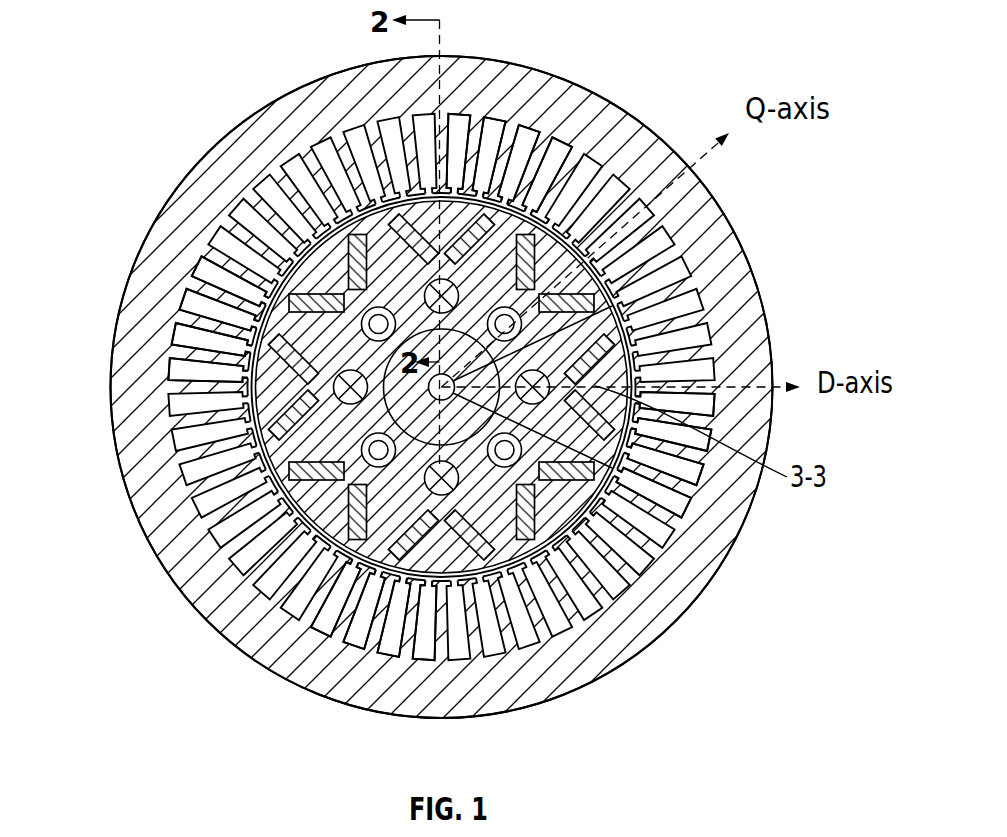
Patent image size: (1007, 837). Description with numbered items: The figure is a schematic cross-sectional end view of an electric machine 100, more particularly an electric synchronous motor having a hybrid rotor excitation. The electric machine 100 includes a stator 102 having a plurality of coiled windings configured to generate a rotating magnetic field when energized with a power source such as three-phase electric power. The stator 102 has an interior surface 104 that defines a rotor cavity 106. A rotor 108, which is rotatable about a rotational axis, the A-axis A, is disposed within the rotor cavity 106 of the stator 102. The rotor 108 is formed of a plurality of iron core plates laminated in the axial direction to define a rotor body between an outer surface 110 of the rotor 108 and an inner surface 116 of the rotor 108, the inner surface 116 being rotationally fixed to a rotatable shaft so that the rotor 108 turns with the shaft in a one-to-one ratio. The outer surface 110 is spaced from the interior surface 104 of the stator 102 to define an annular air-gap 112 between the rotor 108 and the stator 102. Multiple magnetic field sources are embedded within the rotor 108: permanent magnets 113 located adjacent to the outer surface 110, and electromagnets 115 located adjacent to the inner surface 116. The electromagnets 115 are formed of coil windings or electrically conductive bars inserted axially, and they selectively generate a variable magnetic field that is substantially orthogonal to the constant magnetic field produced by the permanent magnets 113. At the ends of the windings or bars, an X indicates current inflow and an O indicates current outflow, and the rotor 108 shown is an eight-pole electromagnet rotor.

The electric machine 100 is at (815, 170).
The stator 102 is at (334, 106).
The interior surface 104 is at (288, 300).
The rotor cavity 106 is at (305, 215).
The rotor 108 is at (489, 260).
The outer surface 110 is at (600, 492).
The annular air-gap 112 is at (586, 525).
The permanent magnets 113 is at (280, 515).
The electromagnets 115 is at (440, 497).
The inner surface 116 is at (346, 512).
The A-axis A is at (300, 252).